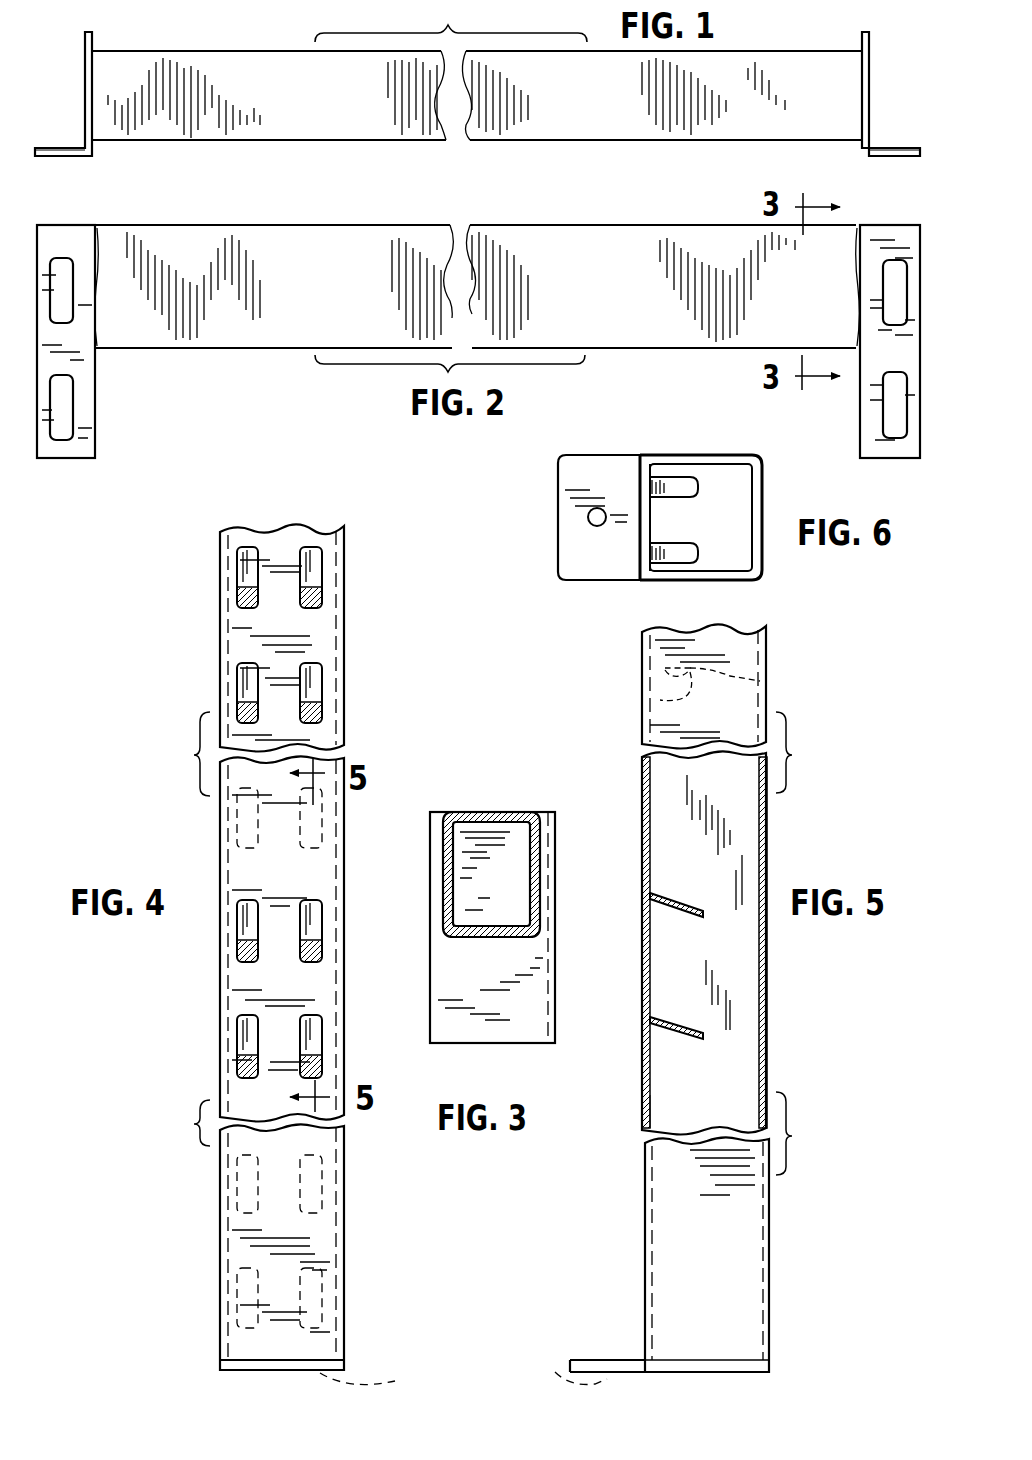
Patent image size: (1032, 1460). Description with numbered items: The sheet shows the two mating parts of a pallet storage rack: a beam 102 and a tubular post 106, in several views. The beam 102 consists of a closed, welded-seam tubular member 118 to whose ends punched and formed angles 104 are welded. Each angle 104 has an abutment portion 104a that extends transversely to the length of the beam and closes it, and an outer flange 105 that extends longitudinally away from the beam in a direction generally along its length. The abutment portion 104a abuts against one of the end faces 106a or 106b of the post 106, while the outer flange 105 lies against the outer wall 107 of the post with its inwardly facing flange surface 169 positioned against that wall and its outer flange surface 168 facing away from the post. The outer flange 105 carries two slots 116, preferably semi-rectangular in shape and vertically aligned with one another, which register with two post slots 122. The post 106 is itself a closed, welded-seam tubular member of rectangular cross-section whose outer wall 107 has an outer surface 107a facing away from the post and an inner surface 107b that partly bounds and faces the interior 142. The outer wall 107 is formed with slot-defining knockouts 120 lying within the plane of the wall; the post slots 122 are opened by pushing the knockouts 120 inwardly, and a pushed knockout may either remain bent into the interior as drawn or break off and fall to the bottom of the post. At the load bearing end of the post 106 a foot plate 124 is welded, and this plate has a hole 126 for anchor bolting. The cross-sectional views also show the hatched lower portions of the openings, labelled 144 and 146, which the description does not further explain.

In FIG. 1, the beam 102 is at (477, 114).
In FIG. 2, the beam 102 is at (477, 263).
In FIG. 3, the beam 102 is at (505, 852).
In FIG. 1, the angle 104 is at (93, 156).
In FIG. 2, the angle 104 is at (100, 374).
In FIG. 3, the angle 104 is at (470, 1045).
In FIG. 1, the abutment portion 104a is at (869, 80).
In FIG. 1, the outer flange 105 is at (60, 156).
In FIG. 2, the outer flange 105 is at (80, 447).
In FIG. 3, the outer flange 105 is at (560, 920).
In FIG. 6, the tubular post 106 is at (665, 510).
In FIG. 4, the tubular post 106 is at (292, 954).
In FIG. 5, the tubular post 106 is at (678, 1004).
In FIG. 6, the end face 106a is at (670, 455).
In FIG. 6, the end face 106b is at (702, 582).
In FIG. 6, the outer wall 107 is at (640, 498).
In FIG. 4, the outer wall 107 is at (282, 873).
In FIG. 5, the outer wall 107 is at (648, 880).
In FIG. 5, the outer surface 107a is at (645, 1104).
In FIG. 5, the inner surface 107b is at (650, 1097).
In FIG. 2, the slot 116 is at (73, 418).
In FIG. 3, the slot 116 is at (580, 853).
In FIG. 1, the tubular member 118 is at (286, 143).
In FIG. 2, the tubular member 118 is at (362, 224).
In FIG. 3, the tubular member 118 is at (458, 914).
In FIG. 6, the knockout 120 is at (688, 545).
In FIG. 4, the knockout 120 is at (240, 810).
In FIG. 5, the knockout 120 is at (765, 685).
In FIG. 4, the post slot 122 is at (238, 575).
In FIG. 5, the post slot 122 is at (650, 935).
In FIG. 6, the foot plate 124 is at (559, 489).
In FIG. 4, the foot plate 124 is at (348, 1362).
In FIG. 5, the foot plate 124 is at (590, 1358).
In FIG. 6, the hole 126 is at (588, 521).
In FIG. 4, the hole 126 is at (377, 1365).
In FIG. 5, the hole 126 is at (558, 1369).
In FIG. 6, the interior 142 is at (718, 513).
In FIG. 5, the interior 142 is at (714, 783).
In FIG. 4, the opening lower edge 144 is at (235, 952).
In FIG. 4, the opening lower edge 146 is at (240, 708).
In FIG. 1, the outer flange surface 168 is at (876, 157).
In FIG. 1, the inwardly facing flange surface 169 is at (870, 146).